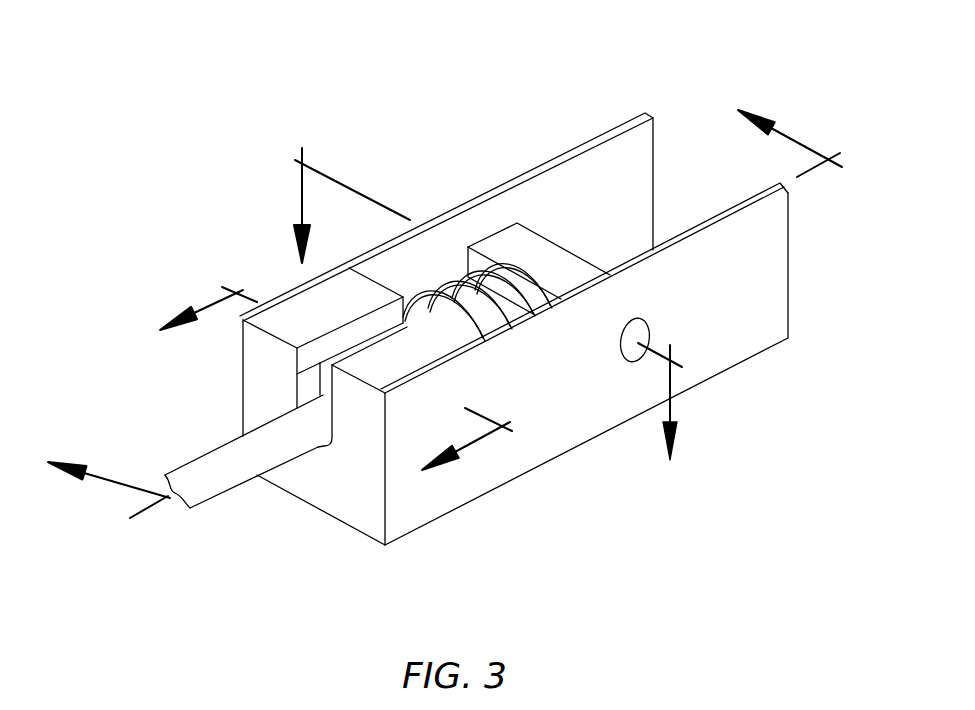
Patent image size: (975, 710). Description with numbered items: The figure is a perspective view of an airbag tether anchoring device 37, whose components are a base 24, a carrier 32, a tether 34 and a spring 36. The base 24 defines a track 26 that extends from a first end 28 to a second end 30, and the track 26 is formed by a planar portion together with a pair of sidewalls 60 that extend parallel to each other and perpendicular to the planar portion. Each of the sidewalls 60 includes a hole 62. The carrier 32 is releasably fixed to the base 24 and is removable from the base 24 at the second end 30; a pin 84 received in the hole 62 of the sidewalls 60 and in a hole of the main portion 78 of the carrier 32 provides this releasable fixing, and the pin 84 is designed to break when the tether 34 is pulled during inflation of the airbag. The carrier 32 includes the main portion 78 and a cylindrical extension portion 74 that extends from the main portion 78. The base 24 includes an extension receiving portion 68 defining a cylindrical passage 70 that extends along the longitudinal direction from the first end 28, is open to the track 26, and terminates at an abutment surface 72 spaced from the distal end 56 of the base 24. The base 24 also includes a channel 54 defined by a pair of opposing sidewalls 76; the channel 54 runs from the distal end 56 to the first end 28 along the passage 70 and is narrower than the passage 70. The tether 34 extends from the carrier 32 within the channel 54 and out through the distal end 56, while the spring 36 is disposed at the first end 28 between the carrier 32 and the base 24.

The base 24 is at (538, 420).
The track 26 is at (527, 203).
The first end 28 is at (430, 247).
The second end 30 is at (580, 180).
The carrier 32 is at (503, 247).
The tether 34 is at (218, 482).
The spring 36 is at (433, 290).
The airbag tether anchoring device 37 is at (653, 66).
The channel 54 is at (340, 317).
The distal end 56 is at (268, 387).
The sidewalls 60 is at (622, 178).
The hole 62 is at (642, 318).
The extension receiving portion 68 is at (300, 328).
The passage 70 is at (315, 380).
The abutment surface 72 is at (320, 397).
The extension portion 74 is at (483, 322).
The opposing sidewalls 76 is at (373, 323).
The main portion 78 is at (555, 272).
The pin 84 is at (643, 358).